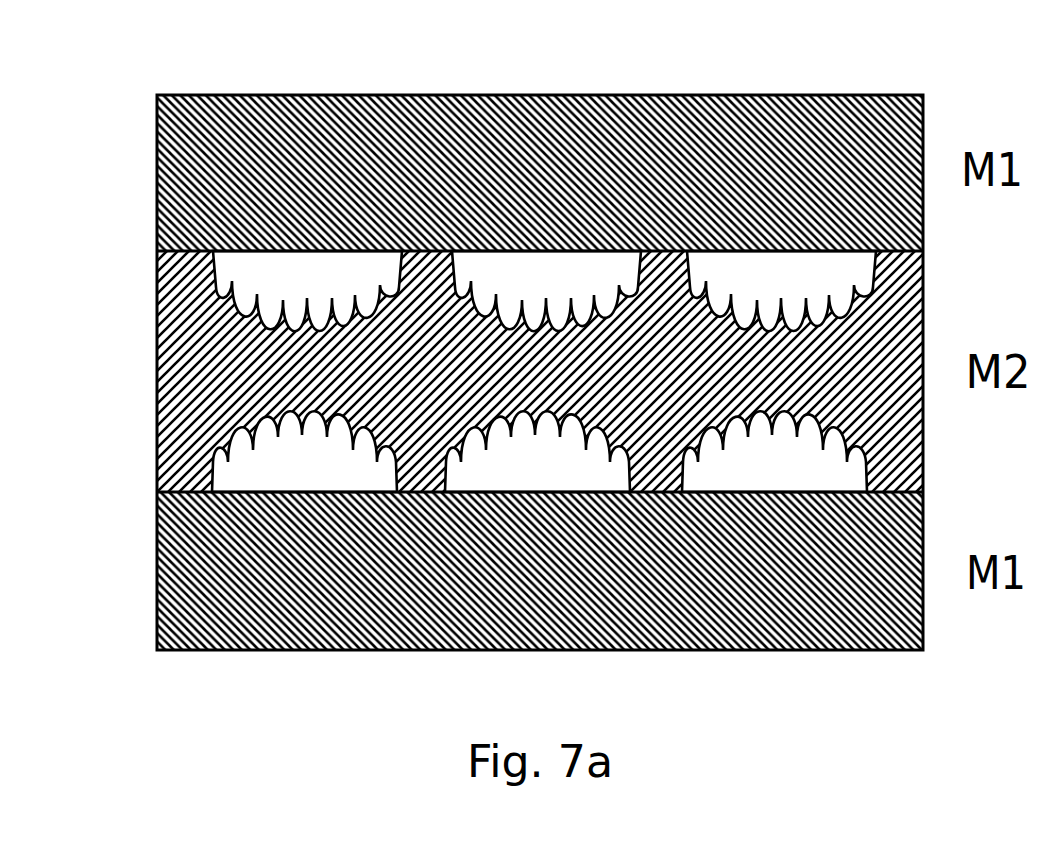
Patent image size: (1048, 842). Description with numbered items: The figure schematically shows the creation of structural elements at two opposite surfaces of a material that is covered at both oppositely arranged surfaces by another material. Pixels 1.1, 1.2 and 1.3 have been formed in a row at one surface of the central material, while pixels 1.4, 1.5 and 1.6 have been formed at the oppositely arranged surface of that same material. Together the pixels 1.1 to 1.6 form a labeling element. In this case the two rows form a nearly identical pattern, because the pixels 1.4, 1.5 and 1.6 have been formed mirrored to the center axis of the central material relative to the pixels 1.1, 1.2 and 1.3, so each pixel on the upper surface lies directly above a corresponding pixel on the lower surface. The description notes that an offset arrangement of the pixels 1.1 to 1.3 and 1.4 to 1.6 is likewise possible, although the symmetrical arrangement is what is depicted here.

The pixel 1.1 is at (290, 468).
The pixel 1.2 is at (533, 467).
The pixel 1.3 is at (777, 468).
The pixel 1.4 is at (312, 278).
The pixel 1.5 is at (553, 278).
The pixel 1.6 is at (782, 277).